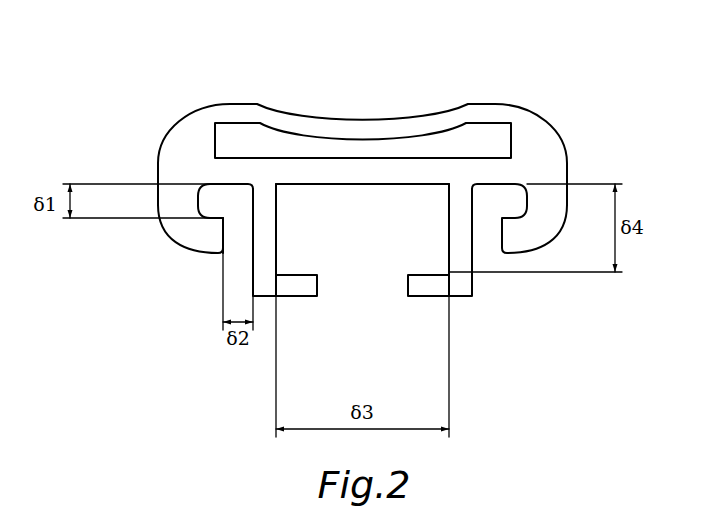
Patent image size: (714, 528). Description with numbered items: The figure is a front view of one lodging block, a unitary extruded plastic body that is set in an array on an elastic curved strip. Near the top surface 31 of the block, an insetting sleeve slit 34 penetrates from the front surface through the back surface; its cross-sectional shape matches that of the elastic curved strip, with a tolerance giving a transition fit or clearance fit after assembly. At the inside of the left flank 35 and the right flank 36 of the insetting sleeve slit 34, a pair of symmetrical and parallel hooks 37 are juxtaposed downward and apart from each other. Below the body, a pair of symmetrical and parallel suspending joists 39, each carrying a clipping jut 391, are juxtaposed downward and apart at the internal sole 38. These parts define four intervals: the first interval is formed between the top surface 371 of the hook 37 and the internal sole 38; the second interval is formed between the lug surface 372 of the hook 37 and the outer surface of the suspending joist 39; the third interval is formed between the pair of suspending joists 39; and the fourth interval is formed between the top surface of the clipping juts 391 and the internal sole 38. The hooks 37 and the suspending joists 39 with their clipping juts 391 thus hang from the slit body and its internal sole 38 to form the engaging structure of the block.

The top surface 31 is at (363, 120).
The insetting sleeve slit 34 is at (233, 137).
The left flank 35 is at (162, 155).
The right flank 36 is at (565, 152).
The hook 37 is at (203, 242).
The top surface of the hook 371 is at (107, 217).
The lug surface of the hook 372 is at (223, 260).
The internal sole 38 is at (108, 186).
The suspending joist 39 is at (268, 288).
The clipping jut 391 is at (305, 292).